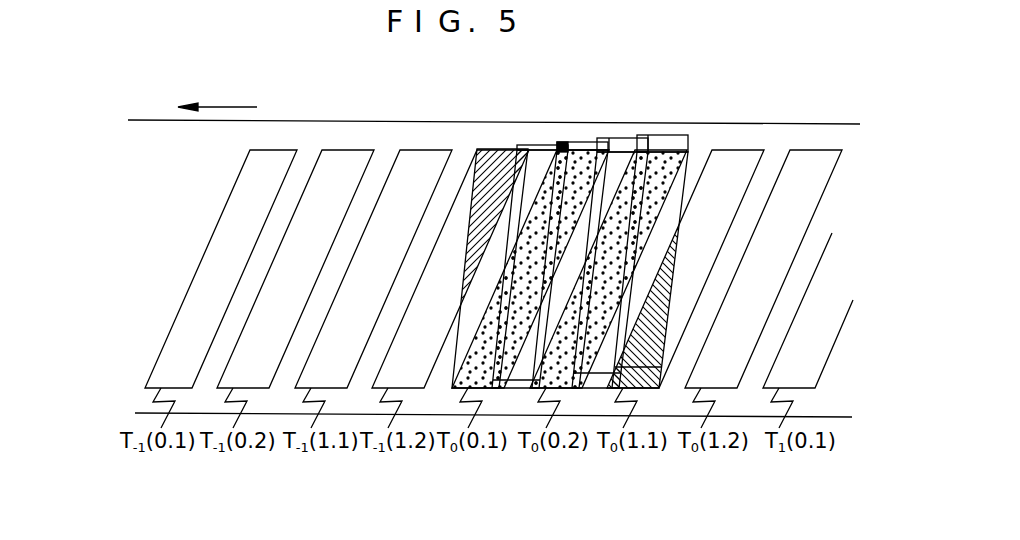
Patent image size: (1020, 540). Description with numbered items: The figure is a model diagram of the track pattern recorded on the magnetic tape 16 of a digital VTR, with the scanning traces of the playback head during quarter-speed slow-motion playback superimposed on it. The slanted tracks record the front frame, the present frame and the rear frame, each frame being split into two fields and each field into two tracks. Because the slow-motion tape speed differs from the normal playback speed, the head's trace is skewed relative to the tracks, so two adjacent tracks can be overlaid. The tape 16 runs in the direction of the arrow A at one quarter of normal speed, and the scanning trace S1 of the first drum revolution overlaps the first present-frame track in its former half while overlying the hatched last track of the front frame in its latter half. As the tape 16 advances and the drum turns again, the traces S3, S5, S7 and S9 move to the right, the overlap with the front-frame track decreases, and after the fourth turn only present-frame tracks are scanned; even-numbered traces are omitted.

The magnetic tape 16 is at (345, 123).
The arrow indicating tape running direction A is at (207, 101).
The scanning trace of first drum revolution S1 is at (490, 229).
The scanning trace of third drum revolution S3 is at (529, 229).
The scanning trace of fifth drum revolution S5 is at (569, 229).
The scanning trace of seventh drum revolution S7 is at (647, 229).
The scanning trace of ninth drum revolution S9 is at (647, 229).